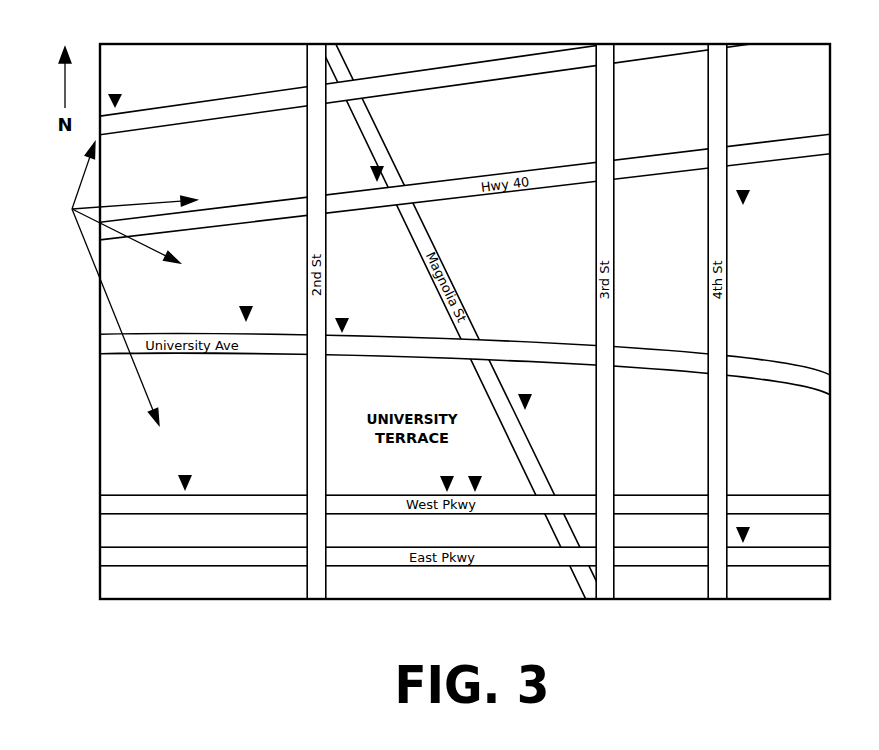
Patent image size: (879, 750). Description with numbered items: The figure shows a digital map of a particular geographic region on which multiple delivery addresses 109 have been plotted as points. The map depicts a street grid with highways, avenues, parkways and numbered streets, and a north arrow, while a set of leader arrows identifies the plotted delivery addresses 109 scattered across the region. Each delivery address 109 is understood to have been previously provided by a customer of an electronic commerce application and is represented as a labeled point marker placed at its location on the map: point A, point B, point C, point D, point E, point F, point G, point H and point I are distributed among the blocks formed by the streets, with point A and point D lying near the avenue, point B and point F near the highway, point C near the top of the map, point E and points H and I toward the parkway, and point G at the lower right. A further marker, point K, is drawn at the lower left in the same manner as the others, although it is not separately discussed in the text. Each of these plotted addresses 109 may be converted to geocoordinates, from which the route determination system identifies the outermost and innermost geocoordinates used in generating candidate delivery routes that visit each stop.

The delivery addresses 109 is at (72, 209).
The point A is at (342, 316).
The point B is at (377, 165).
The point C is at (115, 92).
The point D is at (246, 305).
The point E is at (525, 393).
The point F is at (743, 188).
The point G is at (743, 525).
The point H is at (475, 475).
The point I is at (447, 475).
The map location marker K is at (185, 474).